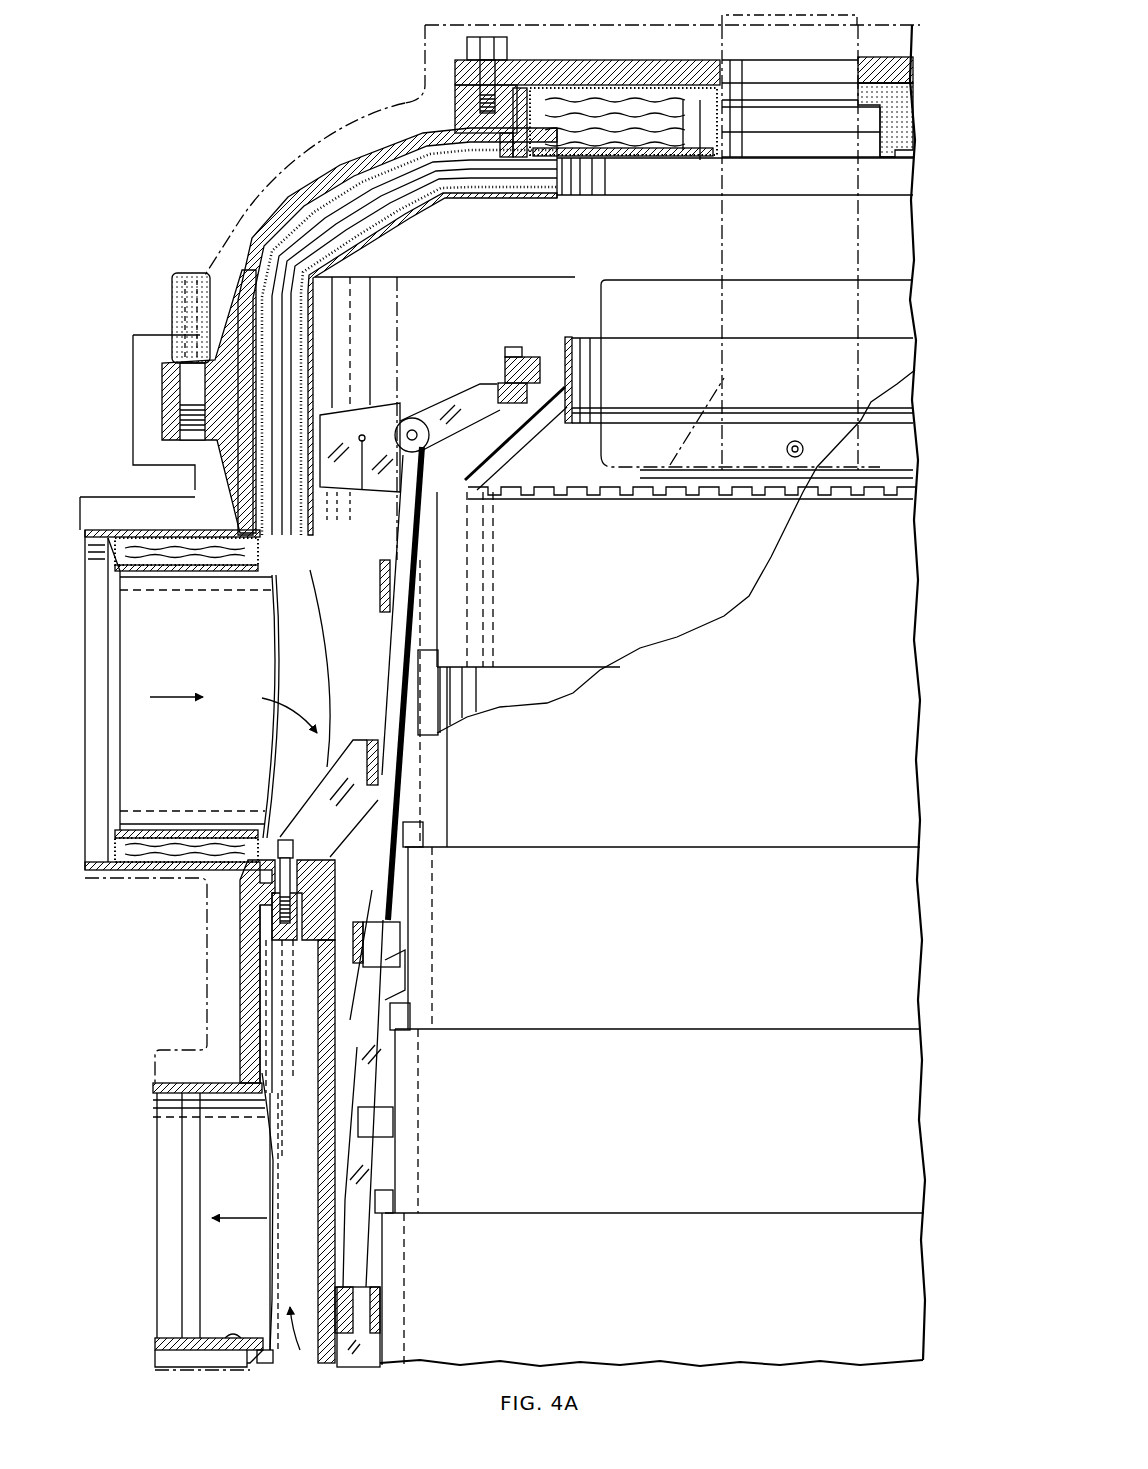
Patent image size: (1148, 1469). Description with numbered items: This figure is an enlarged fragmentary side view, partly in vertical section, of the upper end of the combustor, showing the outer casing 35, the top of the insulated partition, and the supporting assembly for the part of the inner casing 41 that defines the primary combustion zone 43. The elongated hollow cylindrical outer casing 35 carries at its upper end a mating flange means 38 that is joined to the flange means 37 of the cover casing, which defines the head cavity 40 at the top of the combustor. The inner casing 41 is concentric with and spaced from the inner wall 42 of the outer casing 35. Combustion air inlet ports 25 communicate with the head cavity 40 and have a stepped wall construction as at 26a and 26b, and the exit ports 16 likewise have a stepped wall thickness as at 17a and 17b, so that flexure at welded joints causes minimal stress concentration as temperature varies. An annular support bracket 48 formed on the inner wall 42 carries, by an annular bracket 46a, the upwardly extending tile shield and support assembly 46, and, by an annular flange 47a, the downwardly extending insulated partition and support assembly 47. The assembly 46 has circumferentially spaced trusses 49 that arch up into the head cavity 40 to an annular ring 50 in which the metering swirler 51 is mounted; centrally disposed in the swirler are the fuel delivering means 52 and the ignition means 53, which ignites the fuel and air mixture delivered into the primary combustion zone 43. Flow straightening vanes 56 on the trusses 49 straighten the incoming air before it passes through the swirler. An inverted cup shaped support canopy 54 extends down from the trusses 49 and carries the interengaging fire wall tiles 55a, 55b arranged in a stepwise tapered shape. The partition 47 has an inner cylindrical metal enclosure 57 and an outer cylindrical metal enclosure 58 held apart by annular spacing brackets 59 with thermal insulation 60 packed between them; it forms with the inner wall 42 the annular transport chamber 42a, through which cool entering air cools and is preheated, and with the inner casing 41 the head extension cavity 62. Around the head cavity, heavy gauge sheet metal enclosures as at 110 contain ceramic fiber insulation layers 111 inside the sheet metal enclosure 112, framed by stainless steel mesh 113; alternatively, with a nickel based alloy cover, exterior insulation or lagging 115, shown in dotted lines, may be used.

The exit ports 16 is at (217, 1352).
The stepped wall thickness portion 17a is at (187, 1337).
The stepped wall thickness portion 17b is at (170, 1342).
The combustion air inlet ports 25 is at (140, 577).
The stepped wall portion 26a is at (113, 723).
The stepped wall portion 26b is at (97, 662).
The outer casing 35 is at (243, 960).
The flange means 37 is at (227, 333).
The mating flange means 38 is at (222, 432).
The head cavity 40 is at (646, 250).
The inner casing 41 is at (267, 1090).
The inner wall of the outer casing 42 is at (243, 1003).
The annular transport chamber 42a is at (287, 1345).
The primary combustion zone 43 is at (646, 588).
The tile shield and support assembly 46 is at (380, 643).
The annular bracket 46a is at (327, 858).
The insulated partition and support assembly 47 is at (316, 1240).
The annular flange 47a is at (332, 876).
The annular support bracket 48 is at (262, 890).
The trusses 49 is at (472, 405).
The annular ring 50 is at (518, 413).
The metering swirler 51 is at (630, 322).
The fuel delivering means 52 is at (722, 372).
The ignition means 53 is at (783, 448).
The support canopy 54 is at (402, 660).
The fire wall tile 55a is at (715, 563).
The fire wall tile 55b is at (510, 690).
The flow straightening vanes 56 is at (348, 417).
The inner cylindrical metal enclosure 57 is at (334, 1015).
The outer cylindrical metal enclosure 58 is at (317, 993).
The annular spacing brackets 59 is at (323, 1296).
The thermal insulation 60 is at (317, 1128).
The head extension cavity 62 is at (352, 1000).
The ceramic fiber insulation in sheet metal enclosures 110 is at (337, 197).
The ceramic fiber insulation layers 111 is at (417, 200).
The sheet metal enclosure 112 is at (360, 230).
The stainless steel mesh 113 is at (377, 150).
The exterior insulation or lagging 115 is at (237, 223).